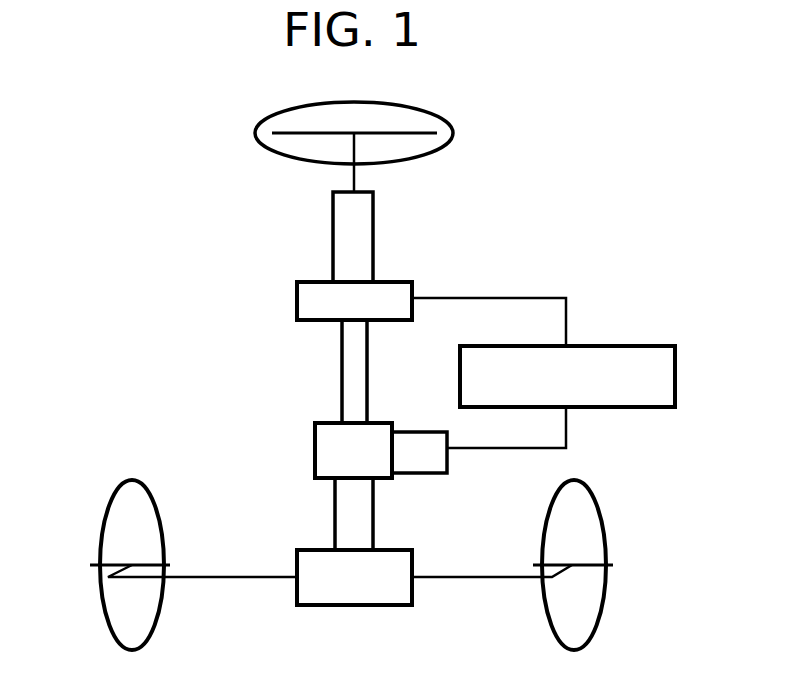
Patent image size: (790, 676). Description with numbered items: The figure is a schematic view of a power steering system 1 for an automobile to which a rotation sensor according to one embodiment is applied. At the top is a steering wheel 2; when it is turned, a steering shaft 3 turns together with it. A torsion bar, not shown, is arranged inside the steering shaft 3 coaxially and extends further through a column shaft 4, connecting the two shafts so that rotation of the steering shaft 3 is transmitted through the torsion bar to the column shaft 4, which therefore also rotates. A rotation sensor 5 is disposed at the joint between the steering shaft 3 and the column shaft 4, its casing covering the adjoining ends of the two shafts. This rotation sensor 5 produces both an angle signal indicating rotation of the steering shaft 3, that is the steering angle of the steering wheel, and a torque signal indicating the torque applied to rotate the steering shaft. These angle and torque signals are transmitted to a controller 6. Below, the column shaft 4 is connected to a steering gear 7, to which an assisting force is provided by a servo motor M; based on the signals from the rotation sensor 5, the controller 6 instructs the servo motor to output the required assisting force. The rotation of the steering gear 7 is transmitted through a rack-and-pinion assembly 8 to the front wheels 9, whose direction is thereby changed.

The power steering system 1 is at (217, 232).
The steering wheel 2 is at (435, 122).
The steering shaft 3 is at (365, 212).
The column shaft 4 is at (345, 368).
The rotation sensor 5 is at (297, 290).
The controller 6 is at (640, 346).
The steering gear 7 is at (320, 437).
The rack-and-pinion assembly 8 is at (400, 557).
The front wheels 9 is at (122, 510).